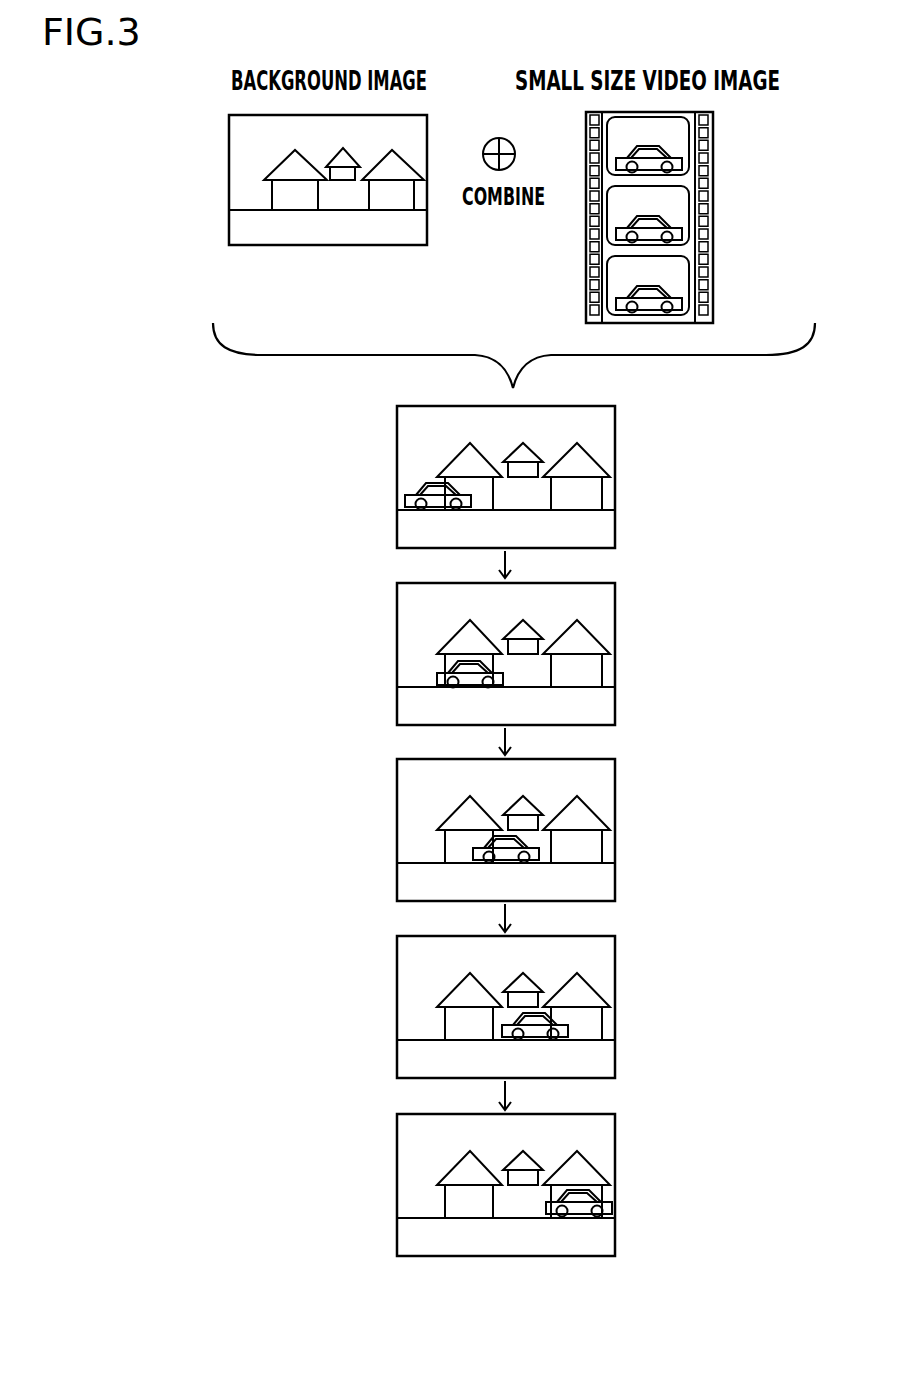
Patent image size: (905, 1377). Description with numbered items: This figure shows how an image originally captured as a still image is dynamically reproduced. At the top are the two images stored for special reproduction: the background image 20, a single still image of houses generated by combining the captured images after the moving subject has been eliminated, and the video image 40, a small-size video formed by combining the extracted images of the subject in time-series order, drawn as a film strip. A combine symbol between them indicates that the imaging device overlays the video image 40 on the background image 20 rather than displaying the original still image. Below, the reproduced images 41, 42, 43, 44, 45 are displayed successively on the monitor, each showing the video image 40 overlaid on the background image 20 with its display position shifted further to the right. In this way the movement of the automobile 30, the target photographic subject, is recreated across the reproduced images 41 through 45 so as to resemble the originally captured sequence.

The background image 20 is at (228, 132).
The video image 40 is at (708, 120).
The automobile 30 is at (405, 503).
The reproduced image 41 is at (397, 423).
The reproduced image 42 is at (397, 605).
The reproduced image 43 is at (397, 783).
The reproduced image 44 is at (397, 962).
The reproduced image 45 is at (397, 1140).